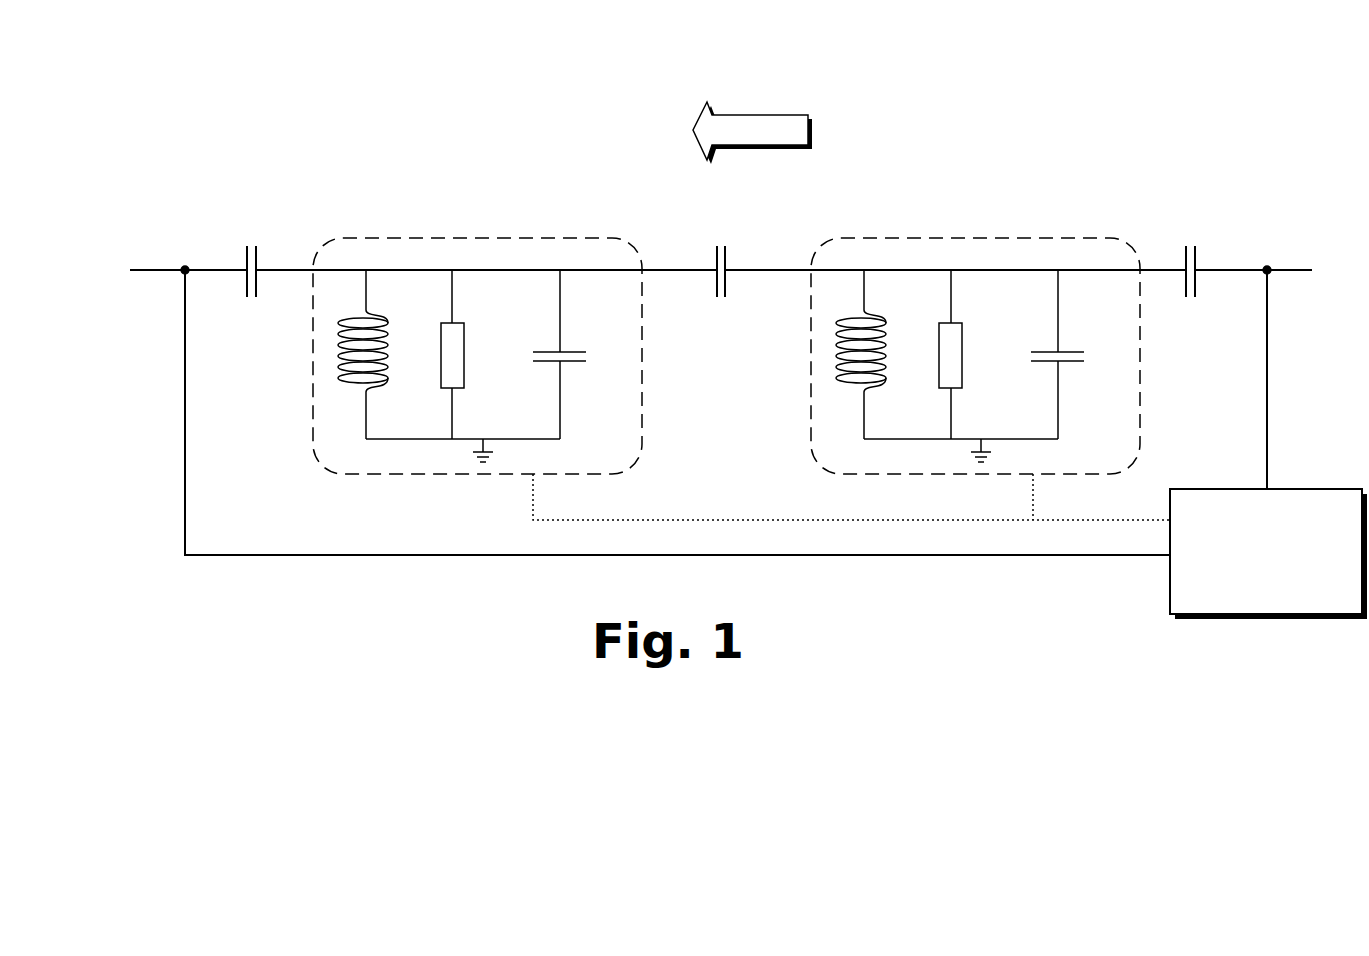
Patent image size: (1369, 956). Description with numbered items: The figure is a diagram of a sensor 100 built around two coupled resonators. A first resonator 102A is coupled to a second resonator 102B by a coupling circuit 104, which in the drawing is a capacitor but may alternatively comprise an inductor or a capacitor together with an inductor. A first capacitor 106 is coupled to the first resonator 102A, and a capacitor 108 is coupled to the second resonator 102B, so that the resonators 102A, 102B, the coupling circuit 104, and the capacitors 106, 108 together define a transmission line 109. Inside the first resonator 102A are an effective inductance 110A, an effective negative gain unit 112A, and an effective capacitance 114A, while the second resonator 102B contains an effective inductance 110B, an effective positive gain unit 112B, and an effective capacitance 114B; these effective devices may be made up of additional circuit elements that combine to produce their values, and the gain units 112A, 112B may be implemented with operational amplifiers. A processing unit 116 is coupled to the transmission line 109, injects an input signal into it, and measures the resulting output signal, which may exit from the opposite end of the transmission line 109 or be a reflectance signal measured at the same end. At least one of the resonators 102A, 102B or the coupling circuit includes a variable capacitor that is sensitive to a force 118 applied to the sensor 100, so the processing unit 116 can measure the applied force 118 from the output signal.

The sensor 100 is at (144, 140).
The first resonator 102A is at (410, 236).
The second resonator 102B is at (922, 236).
The coupling circuit 104 is at (717, 248).
The first capacitor 106 is at (247, 248).
The capacitor 108 is at (1196, 248).
The transmission line 109 is at (157, 272).
The effective inductance 110A is at (345, 372).
The effective inductance 110B is at (838, 372).
The effective negative gain unit 112A is at (464, 390).
The effective positive gain unit 112B is at (963, 390).
The effective capacitance 114A is at (586, 362).
The effective capacitance 114B is at (1085, 362).
The processing unit 116 is at (1252, 589).
The force 118 is at (765, 115).